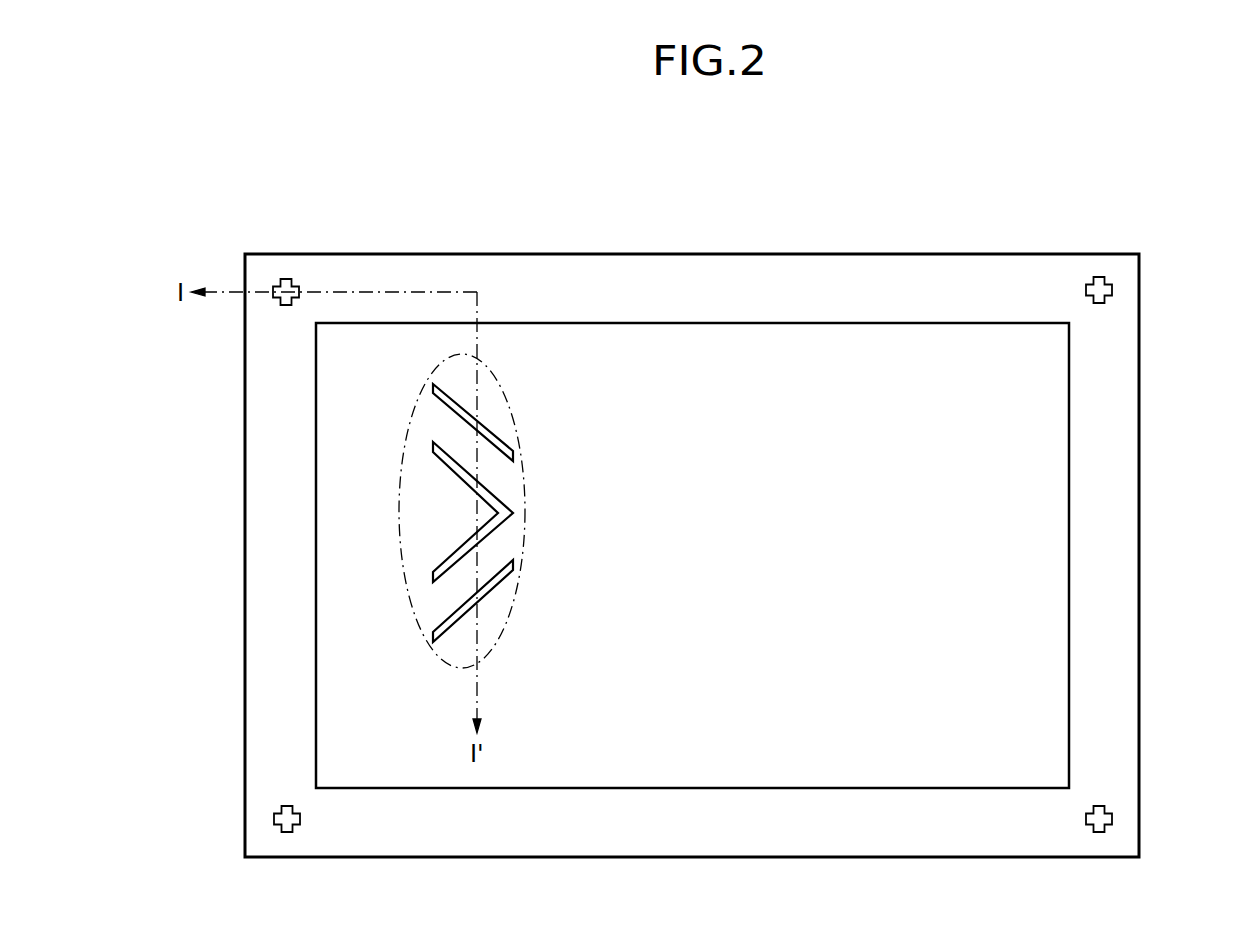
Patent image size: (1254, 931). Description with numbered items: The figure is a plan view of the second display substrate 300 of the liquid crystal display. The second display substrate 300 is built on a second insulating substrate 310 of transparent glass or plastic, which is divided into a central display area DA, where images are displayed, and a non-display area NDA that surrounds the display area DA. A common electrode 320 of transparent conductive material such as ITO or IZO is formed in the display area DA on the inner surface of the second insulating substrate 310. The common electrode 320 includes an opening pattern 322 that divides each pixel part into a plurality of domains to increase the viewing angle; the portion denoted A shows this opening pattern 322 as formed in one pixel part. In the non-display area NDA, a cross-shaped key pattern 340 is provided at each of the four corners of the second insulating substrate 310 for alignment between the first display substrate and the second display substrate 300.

The second display substrate 300 is at (970, 233).
The second insulating substrate 310 is at (262, 407).
The common electrode 320 is at (316, 472).
The opening pattern 322 is at (490, 496).
The key pattern 340 is at (285, 304).
The portion A is at (521, 421).
The non-display area NDA is at (1115, 406).
The display area DA is at (1042, 527).